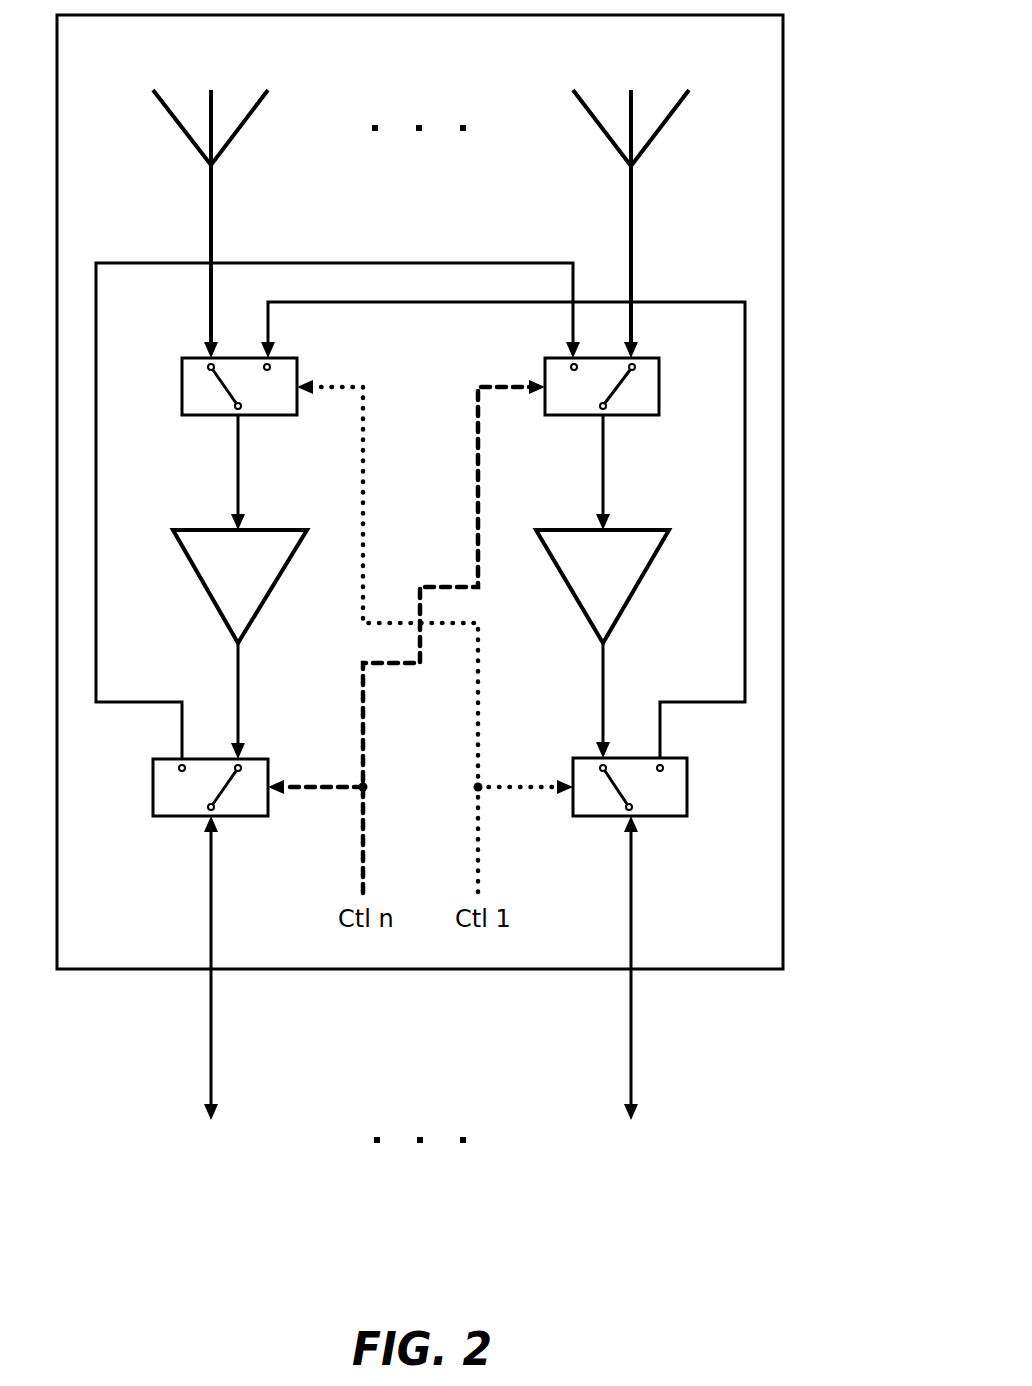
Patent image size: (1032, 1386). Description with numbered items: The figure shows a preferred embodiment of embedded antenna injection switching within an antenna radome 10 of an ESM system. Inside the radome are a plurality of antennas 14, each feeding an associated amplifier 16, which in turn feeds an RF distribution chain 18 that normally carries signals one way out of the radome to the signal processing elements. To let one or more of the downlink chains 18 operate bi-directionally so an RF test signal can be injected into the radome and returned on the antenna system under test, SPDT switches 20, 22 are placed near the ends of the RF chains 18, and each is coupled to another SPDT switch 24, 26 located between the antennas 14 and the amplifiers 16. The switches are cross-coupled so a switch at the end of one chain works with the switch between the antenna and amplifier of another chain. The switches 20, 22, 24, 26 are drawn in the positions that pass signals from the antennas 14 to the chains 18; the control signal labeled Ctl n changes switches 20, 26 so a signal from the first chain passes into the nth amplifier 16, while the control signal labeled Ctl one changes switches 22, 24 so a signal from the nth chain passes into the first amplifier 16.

The antenna radome 10 is at (790, 326).
The antenna 14 is at (242, 134).
The amplifier 16 is at (270, 601).
The RF distribution chain 18 is at (677, 1083).
The SPDT switch 20 is at (271, 819).
The SPDT switch 22 is at (690, 820).
The SPDT switch 24 is at (300, 417).
The SPDT switch 26 is at (663, 418).